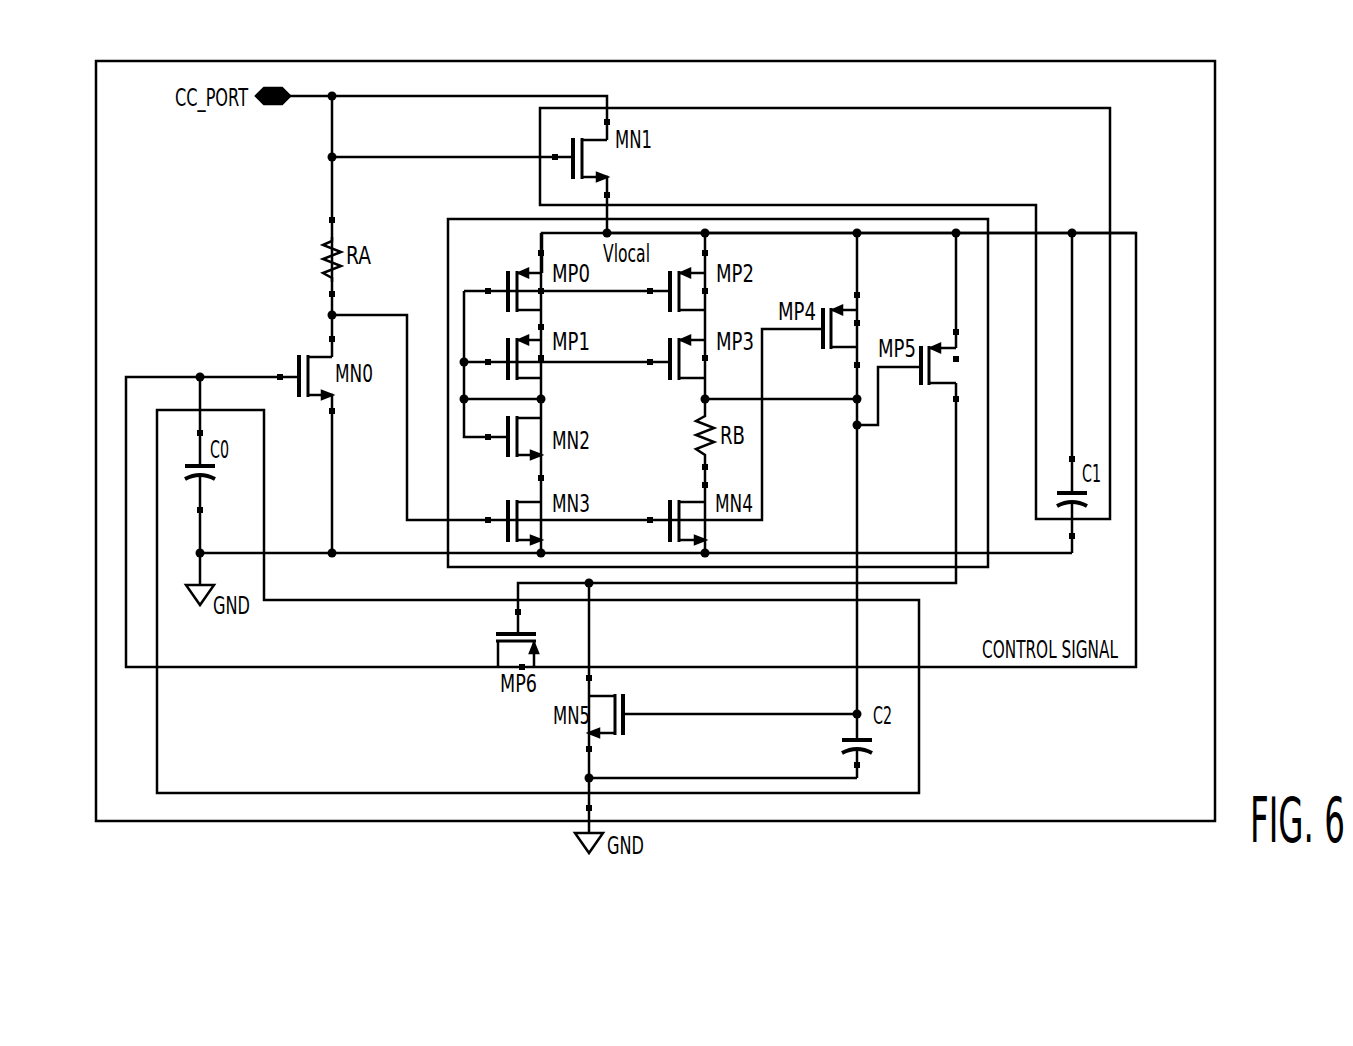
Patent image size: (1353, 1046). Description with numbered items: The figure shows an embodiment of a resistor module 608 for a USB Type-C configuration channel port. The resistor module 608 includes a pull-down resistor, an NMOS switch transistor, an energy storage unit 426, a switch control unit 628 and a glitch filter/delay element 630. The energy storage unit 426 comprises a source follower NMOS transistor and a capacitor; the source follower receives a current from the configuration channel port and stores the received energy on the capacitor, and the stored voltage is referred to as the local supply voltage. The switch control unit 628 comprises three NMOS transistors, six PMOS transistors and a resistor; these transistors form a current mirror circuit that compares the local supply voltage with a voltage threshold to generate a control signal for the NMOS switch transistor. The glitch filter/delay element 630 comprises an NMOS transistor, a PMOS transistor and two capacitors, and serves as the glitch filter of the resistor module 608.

The energy storage unit 426 is at (1110, 196).
The resistor module 608 is at (1215, 245).
The switch control unit 628 is at (448, 246).
The glitch filter/delay element 630 is at (920, 742).